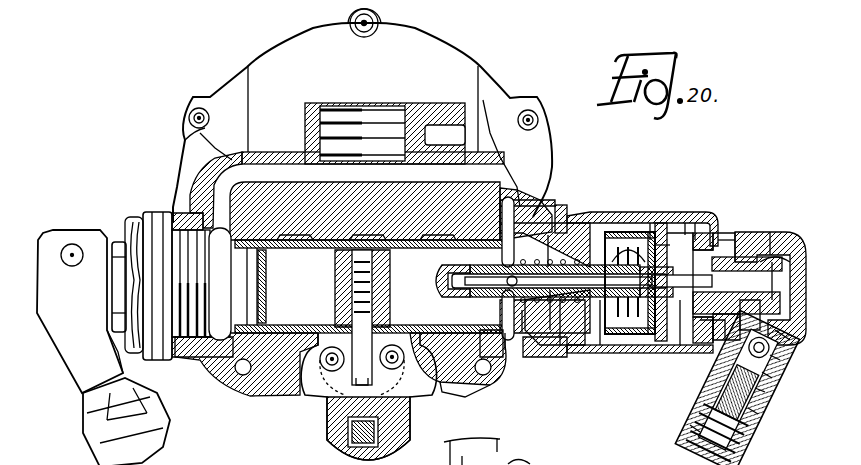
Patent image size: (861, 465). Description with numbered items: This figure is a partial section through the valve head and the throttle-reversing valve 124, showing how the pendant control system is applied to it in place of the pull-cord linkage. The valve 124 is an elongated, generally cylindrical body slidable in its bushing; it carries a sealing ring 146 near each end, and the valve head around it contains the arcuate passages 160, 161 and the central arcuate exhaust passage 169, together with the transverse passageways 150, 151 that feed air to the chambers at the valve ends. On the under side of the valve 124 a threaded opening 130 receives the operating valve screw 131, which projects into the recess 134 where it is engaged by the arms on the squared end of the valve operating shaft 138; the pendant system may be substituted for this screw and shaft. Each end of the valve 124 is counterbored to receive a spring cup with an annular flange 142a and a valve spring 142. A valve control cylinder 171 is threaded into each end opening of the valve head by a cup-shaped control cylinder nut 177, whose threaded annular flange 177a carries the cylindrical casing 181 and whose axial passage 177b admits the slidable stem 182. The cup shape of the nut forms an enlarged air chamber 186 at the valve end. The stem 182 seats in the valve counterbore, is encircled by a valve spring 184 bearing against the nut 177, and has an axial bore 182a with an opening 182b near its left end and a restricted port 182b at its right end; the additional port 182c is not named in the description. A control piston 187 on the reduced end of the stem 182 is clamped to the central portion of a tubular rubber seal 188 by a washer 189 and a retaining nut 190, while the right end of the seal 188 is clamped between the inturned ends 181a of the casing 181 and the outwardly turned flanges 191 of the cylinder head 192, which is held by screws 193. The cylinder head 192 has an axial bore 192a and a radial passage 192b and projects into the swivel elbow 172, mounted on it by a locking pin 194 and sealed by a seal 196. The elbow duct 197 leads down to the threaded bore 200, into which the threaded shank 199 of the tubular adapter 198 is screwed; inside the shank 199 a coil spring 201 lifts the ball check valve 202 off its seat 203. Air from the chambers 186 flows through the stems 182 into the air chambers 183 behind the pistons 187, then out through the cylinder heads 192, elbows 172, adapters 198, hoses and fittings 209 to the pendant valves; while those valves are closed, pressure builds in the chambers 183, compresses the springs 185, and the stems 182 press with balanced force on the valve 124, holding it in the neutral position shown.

The throttle-reversing valve 124 is at (213, 353).
The threaded opening 130 is at (355, 335).
The operating valve screw 131 is at (320, 372).
The recess 134 is at (440, 396).
The valve operating shaft 138 is at (330, 441).
The valve spring 142 is at (446, 276).
The annular flange 142a is at (503, 205).
The sealing ring 146 is at (200, 205).
The transverse passageway 150 is at (193, 132).
The transverse passageway 151 is at (495, 125).
The arcuate passage 160 is at (300, 249).
The arcuate passage 161 is at (416, 255).
The exhaust passage 169 is at (322, 251).
The valve control cylinder 171 is at (131, 212).
The swivel elbow 172 is at (52, 237).
The control cylinder nut 177 is at (572, 222).
The threaded annular flange 177a is at (590, 230).
The axial passage 177b is at (600, 355).
The cylindrical casing 181 is at (700, 232).
The inturned ends 181a is at (740, 238).
The slidable stem 182 is at (545, 352).
The axial bore 182a is at (565, 347).
The opening 182b is at (505, 355).
The lower band 182c is at (640, 355).
The air chamber 183 is at (700, 348).
The valve spring 184 is at (522, 340).
The springs 185 is at (660, 258).
The air chamber 186 is at (562, 215).
The control piston 187 is at (655, 226).
The cup-shaped seal 188 is at (663, 240).
The washer 189 is at (690, 224).
The retaining nut 190 is at (708, 240).
The outwardly turned flanges 191 is at (720, 348).
The cylinder head 192 is at (718, 274).
The axial bore 192a is at (695, 355).
The radial passage 192b is at (737, 285).
The screws 193 is at (760, 230).
The locking pin 194 is at (770, 232).
The seal 196 is at (778, 340).
The duct 197 is at (772, 360).
The adapter 198 is at (742, 458).
The threaded shank 199 is at (755, 414).
The threaded bore 200 is at (760, 392).
The coil spring 201 is at (735, 352).
The ball check valve 202 is at (767, 336).
The seat 203 is at (768, 378).
The fittings 209 is at (690, 430).